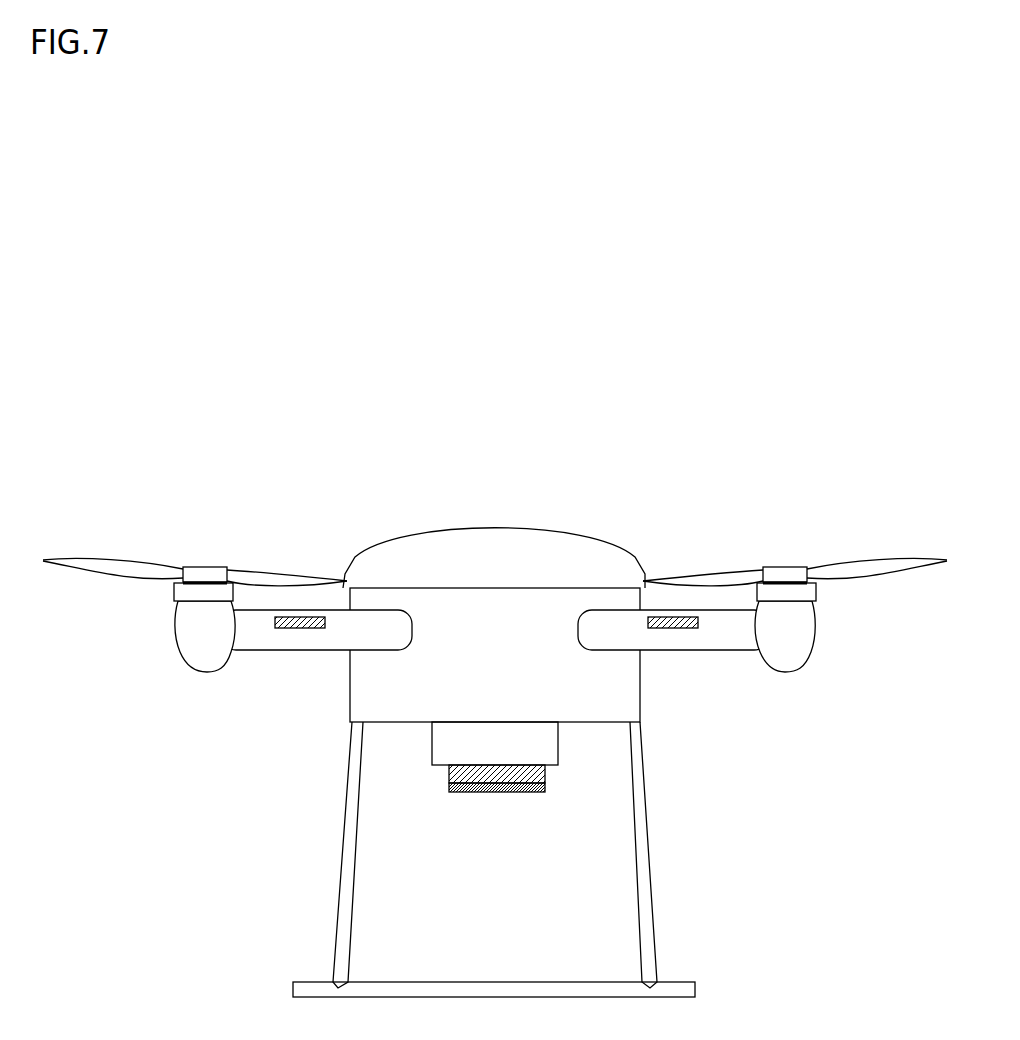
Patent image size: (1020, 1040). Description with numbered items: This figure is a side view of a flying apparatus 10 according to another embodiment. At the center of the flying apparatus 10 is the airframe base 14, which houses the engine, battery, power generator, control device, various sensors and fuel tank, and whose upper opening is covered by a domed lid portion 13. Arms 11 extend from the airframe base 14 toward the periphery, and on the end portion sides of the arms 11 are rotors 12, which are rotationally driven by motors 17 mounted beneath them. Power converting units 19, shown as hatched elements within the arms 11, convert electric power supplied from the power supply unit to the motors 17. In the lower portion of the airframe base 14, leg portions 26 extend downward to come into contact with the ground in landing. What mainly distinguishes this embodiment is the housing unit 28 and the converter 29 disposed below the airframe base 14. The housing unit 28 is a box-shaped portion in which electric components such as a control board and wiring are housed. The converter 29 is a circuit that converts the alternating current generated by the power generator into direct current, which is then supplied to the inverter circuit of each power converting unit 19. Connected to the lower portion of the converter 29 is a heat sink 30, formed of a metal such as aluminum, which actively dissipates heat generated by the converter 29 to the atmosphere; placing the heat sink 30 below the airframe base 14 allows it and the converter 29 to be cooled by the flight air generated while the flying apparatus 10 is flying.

The flying apparatus 10 is at (485, 374).
The arms 11 is at (253, 651).
The rotors 12 is at (140, 560).
The lid portion 13 is at (568, 533).
The airframe base 14 is at (382, 727).
The motors 17 is at (174, 590).
The power converting units 19 is at (307, 629).
The leg portions 26 is at (337, 908).
The housing unit 28 is at (558, 752).
The converter 29 is at (545, 775).
The heat sink 30 is at (545, 791).